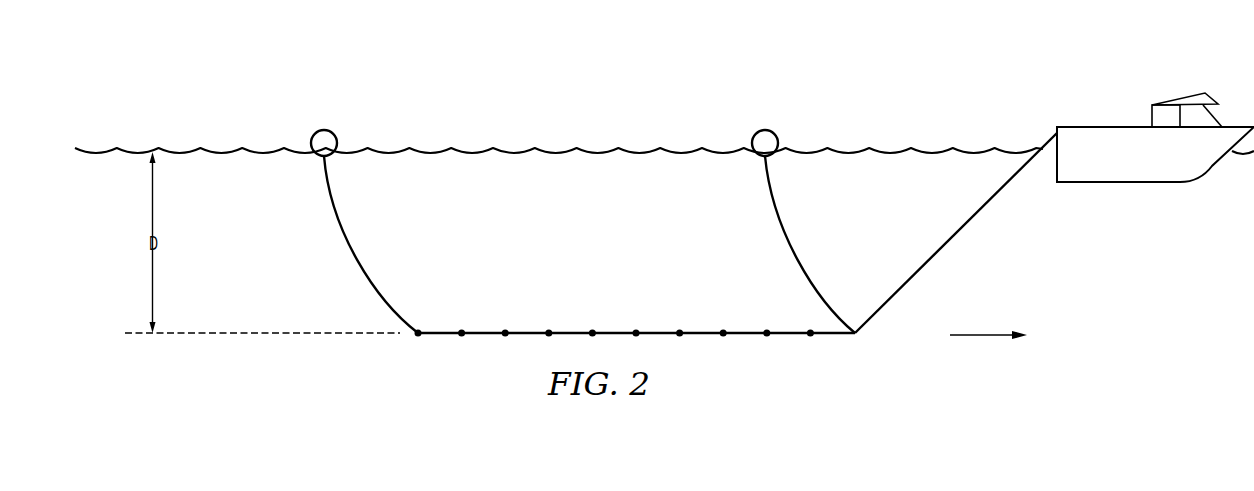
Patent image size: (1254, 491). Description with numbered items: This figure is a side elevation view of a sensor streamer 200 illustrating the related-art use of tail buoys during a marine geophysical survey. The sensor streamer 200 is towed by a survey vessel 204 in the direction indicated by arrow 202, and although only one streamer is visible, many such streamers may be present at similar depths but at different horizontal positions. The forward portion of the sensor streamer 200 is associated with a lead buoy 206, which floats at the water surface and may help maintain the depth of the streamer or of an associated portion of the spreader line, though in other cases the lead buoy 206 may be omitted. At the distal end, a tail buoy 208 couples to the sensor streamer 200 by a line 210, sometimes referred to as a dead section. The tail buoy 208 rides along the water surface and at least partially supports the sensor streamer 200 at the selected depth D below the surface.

The sensor streamer 200 is at (608, 331).
The arrow 202 is at (992, 336).
The survey vessel 204 is at (1107, 125).
The lead buoy 206 is at (770, 130).
The tail buoy 208 is at (322, 130).
The line 210 is at (345, 240).